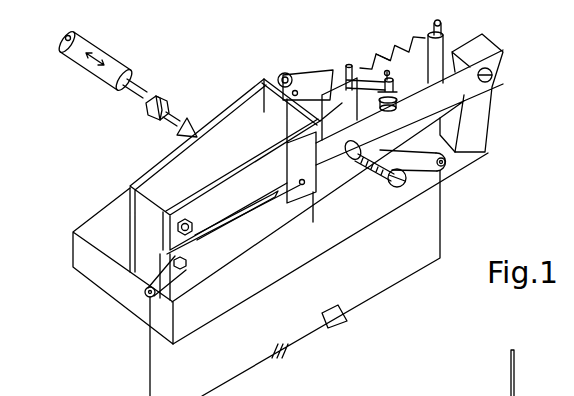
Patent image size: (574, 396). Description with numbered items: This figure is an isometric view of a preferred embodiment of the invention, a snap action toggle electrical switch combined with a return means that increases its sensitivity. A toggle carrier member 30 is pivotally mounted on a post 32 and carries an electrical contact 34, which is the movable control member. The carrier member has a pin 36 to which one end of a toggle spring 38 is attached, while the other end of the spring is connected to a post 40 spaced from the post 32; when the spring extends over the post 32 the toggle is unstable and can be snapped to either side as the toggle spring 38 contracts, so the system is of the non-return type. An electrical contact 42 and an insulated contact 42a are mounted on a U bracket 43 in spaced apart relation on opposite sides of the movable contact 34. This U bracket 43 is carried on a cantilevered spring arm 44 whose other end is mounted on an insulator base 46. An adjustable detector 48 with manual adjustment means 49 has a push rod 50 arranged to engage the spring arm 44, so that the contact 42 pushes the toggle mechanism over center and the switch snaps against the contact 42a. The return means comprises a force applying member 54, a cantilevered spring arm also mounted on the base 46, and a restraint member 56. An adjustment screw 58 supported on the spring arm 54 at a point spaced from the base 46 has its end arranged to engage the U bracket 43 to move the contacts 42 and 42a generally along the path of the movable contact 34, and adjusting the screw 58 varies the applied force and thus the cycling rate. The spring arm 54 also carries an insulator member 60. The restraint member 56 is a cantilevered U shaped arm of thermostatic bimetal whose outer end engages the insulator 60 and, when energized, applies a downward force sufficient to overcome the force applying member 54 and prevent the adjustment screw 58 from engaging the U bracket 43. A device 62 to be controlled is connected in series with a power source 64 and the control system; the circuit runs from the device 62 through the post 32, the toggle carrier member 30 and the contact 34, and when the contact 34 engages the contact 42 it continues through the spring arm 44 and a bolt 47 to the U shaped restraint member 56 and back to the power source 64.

The toggle carrier member 30 is at (332, 70).
The post 32 is at (391, 73).
The electrical contact 34 is at (292, 72).
The pin 36 is at (360, 66).
The toggle spring 38 is at (386, 38).
The post 40 is at (438, 30).
The electrical contact 42 is at (298, 68).
The insulated contact 42a is at (375, 150).
The U bracket 43 is at (263, 100).
The cantilevered spring arm 44 is at (190, 163).
The insulator base 46 is at (103, 224).
The bolt 47 is at (200, 207).
The adjustable detector 48 is at (84, 46).
The manual adjustment means 49 is at (160, 97).
The push rod 50 is at (183, 116).
The force applying member 54 is at (473, 100).
The restraint member 56 is at (270, 233).
The adjustment screw 58 is at (397, 187).
The insulator member 60 is at (288, 147).
The device to be controlled 62 is at (373, 292).
The power source 64 is at (283, 357).